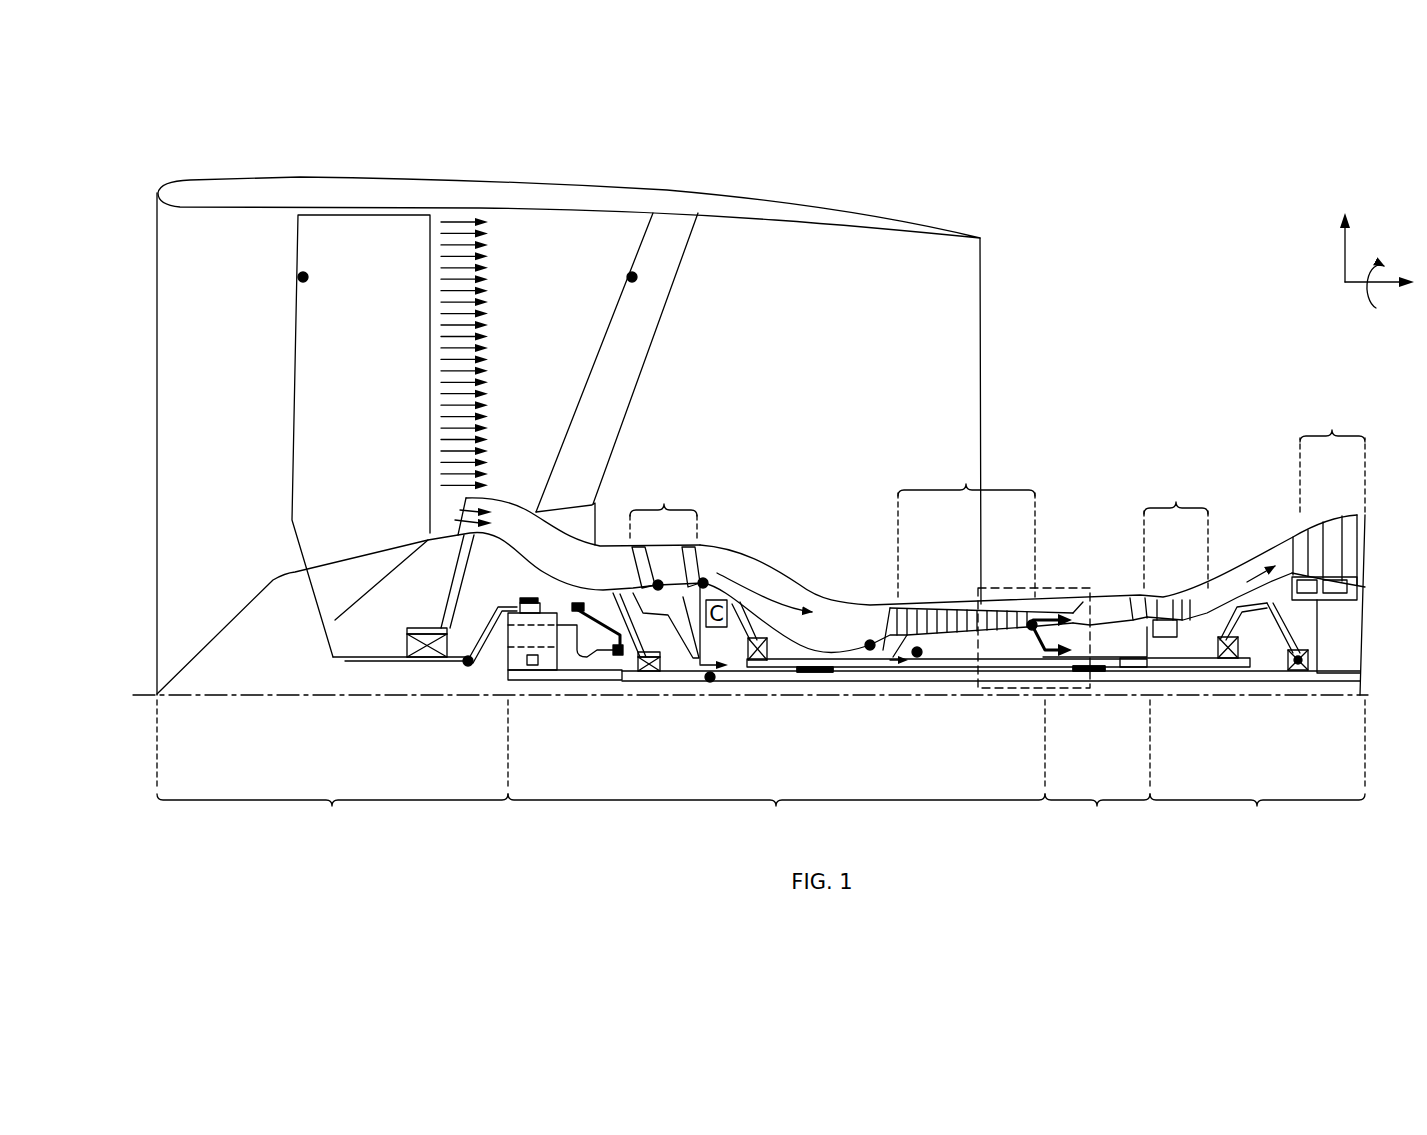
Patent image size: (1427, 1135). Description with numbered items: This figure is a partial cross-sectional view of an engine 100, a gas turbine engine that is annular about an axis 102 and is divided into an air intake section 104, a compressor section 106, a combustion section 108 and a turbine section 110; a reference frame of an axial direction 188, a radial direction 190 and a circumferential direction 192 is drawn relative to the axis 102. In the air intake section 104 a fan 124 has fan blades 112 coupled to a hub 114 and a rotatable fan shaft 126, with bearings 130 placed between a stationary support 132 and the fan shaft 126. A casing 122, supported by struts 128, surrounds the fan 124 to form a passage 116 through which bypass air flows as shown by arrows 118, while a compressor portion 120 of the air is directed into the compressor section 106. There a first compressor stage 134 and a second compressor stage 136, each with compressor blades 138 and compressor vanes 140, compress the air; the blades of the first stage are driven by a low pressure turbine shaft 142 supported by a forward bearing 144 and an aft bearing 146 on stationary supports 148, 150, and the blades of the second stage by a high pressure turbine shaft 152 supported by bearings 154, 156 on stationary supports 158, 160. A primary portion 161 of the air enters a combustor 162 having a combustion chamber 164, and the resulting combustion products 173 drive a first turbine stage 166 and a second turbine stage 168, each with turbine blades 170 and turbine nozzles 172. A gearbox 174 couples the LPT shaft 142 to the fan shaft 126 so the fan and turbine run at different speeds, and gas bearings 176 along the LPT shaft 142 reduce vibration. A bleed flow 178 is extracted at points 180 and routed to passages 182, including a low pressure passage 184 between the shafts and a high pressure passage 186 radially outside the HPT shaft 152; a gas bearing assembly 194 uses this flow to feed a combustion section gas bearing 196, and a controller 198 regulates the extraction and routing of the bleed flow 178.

The engine 100 is at (235, 130).
The axis 102 is at (228, 700).
The air intake section 104 is at (332, 770).
The compressor section 106 is at (776, 770).
The combustion section 108 is at (1097, 770).
The turbine section 110 is at (1257, 770).
The fan blades 112 is at (300, 277).
The hub 114 is at (222, 645).
The passage 116 is at (527, 383).
The flow of air 118 is at (445, 235).
The compressor portion of the air 120 is at (452, 520).
The casing 122 is at (657, 202).
The fan 124 is at (180, 330).
The fan shaft 126 is at (463, 668).
The struts 128 is at (628, 277).
The bearings 130 is at (398, 658).
The stationary support 132 is at (455, 575).
The first compressor stage 134 is at (665, 534).
The second compressor stage 136 is at (978, 557).
The compressor blades 138 is at (633, 574).
The compressor vanes 140 is at (655, 545).
The low pressure turbine shaft 142 is at (708, 685).
The forward end low pressure turbine bearing 144 is at (655, 672).
The aft end low pressure turbine bearing 146 is at (1298, 673).
The stationary support 148 is at (620, 683).
The stationary support 150 is at (1345, 626).
The high pressure turbine shaft 152 is at (917, 658).
The forward end high pressure turbine bearing 154 is at (770, 640).
The aft end high pressure turbine bearing 156 is at (1262, 668).
The stationary support 158 is at (728, 684).
The stationary support 160 is at (1228, 660).
The primary portion 161 is at (795, 625).
The combustor 162 is at (1118, 610).
The combustion chamber 164 is at (1098, 600).
The first turbine stage 166 is at (1176, 548).
The second turbine stage 168 is at (1332, 459).
The turbine blades 170 is at (1212, 606).
The turbine nozzles 172 is at (1163, 612).
The combustion products 173 is at (1258, 575).
The gearbox 174 is at (497, 663).
The gas bearings 176 is at (830, 670).
The bleed flow 178 is at (880, 625).
The points 180 is at (660, 580).
The passages 182 is at (778, 672).
The low pressure passage 184 is at (815, 669).
The high pressure passage 186 is at (1089, 668).
The axial direction 188 is at (1392, 287).
The radial direction 190 is at (1350, 245).
The circumferential direction 192 is at (1356, 305).
The gas bearing assembly 194 is at (1010, 585).
The combustion section gas bearing 196 is at (1010, 585).
The controller 198 is at (760, 598).